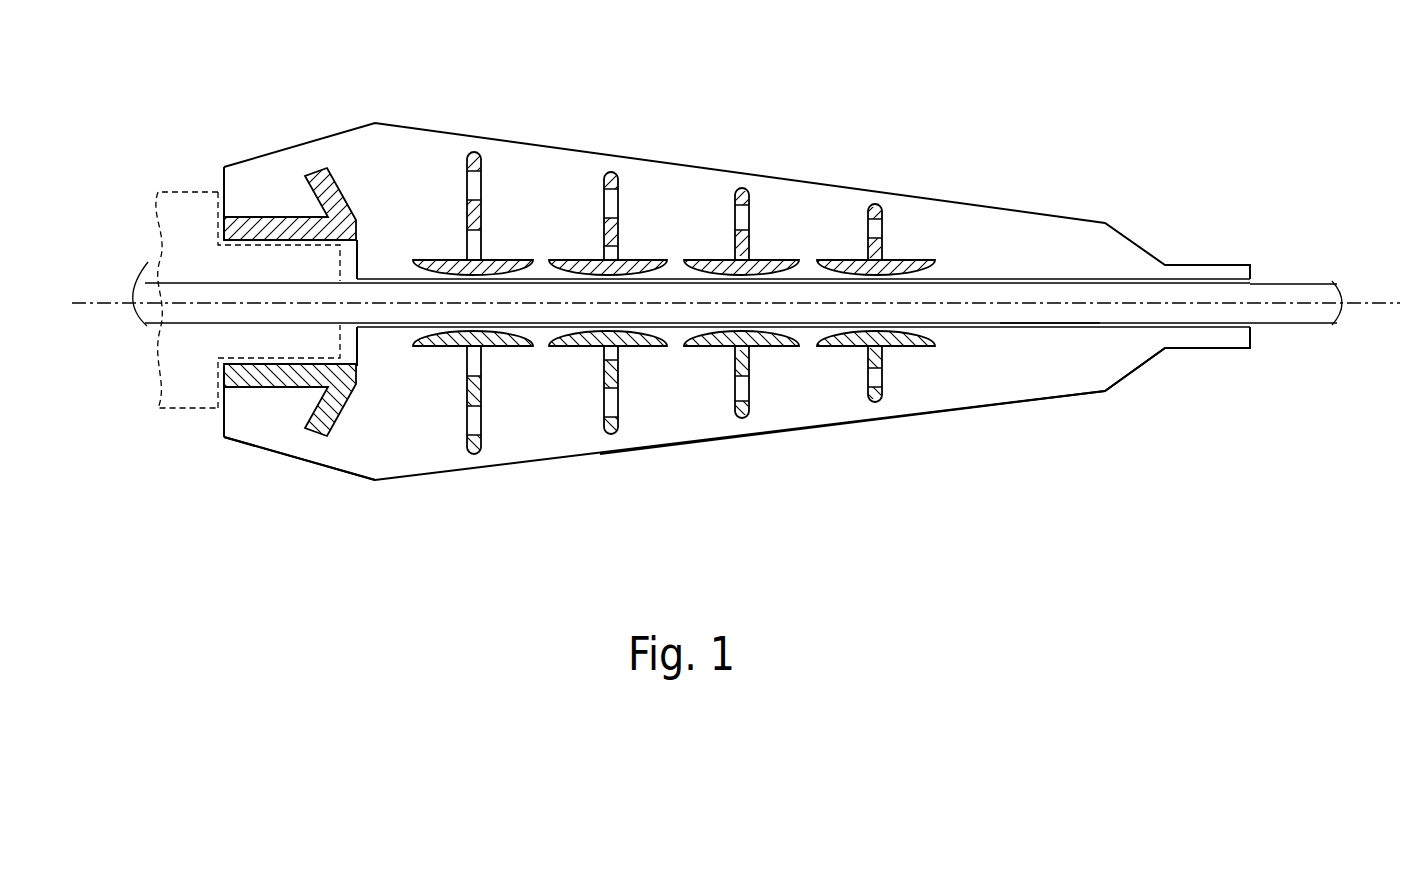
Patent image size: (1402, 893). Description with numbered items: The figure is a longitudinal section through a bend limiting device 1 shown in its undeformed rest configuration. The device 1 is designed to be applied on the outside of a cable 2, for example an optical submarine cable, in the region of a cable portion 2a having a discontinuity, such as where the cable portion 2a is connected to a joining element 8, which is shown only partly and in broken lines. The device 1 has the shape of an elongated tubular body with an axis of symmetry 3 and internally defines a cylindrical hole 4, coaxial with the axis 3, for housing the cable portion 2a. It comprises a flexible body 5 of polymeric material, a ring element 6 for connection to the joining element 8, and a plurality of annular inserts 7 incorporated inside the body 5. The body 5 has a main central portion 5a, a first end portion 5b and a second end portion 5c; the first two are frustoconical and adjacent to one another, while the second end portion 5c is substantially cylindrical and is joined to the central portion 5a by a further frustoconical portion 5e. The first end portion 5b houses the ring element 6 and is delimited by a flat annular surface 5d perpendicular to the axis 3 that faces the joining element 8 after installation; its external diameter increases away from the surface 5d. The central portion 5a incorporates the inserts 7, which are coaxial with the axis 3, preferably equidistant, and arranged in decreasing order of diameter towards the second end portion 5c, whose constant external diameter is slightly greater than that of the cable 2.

The bend limiting device 1 is at (983, 129).
The cable 2 is at (1296, 287).
The cable portion 2a is at (1042, 314).
The axis of symmetry 3 is at (1200, 306).
The cylindrical hole 4 is at (987, 292).
The flexible body 5 is at (668, 417).
The main central portion 5a is at (840, 400).
The first end portion 5b is at (292, 437).
The second end portion 5c is at (1235, 340).
The flat annular surface 5d is at (224, 423).
The further frustoconical portion 5e is at (1149, 353).
The ring element 6 is at (276, 217).
The annular inserts 7 is at (870, 212).
The joining element 8 is at (195, 210).